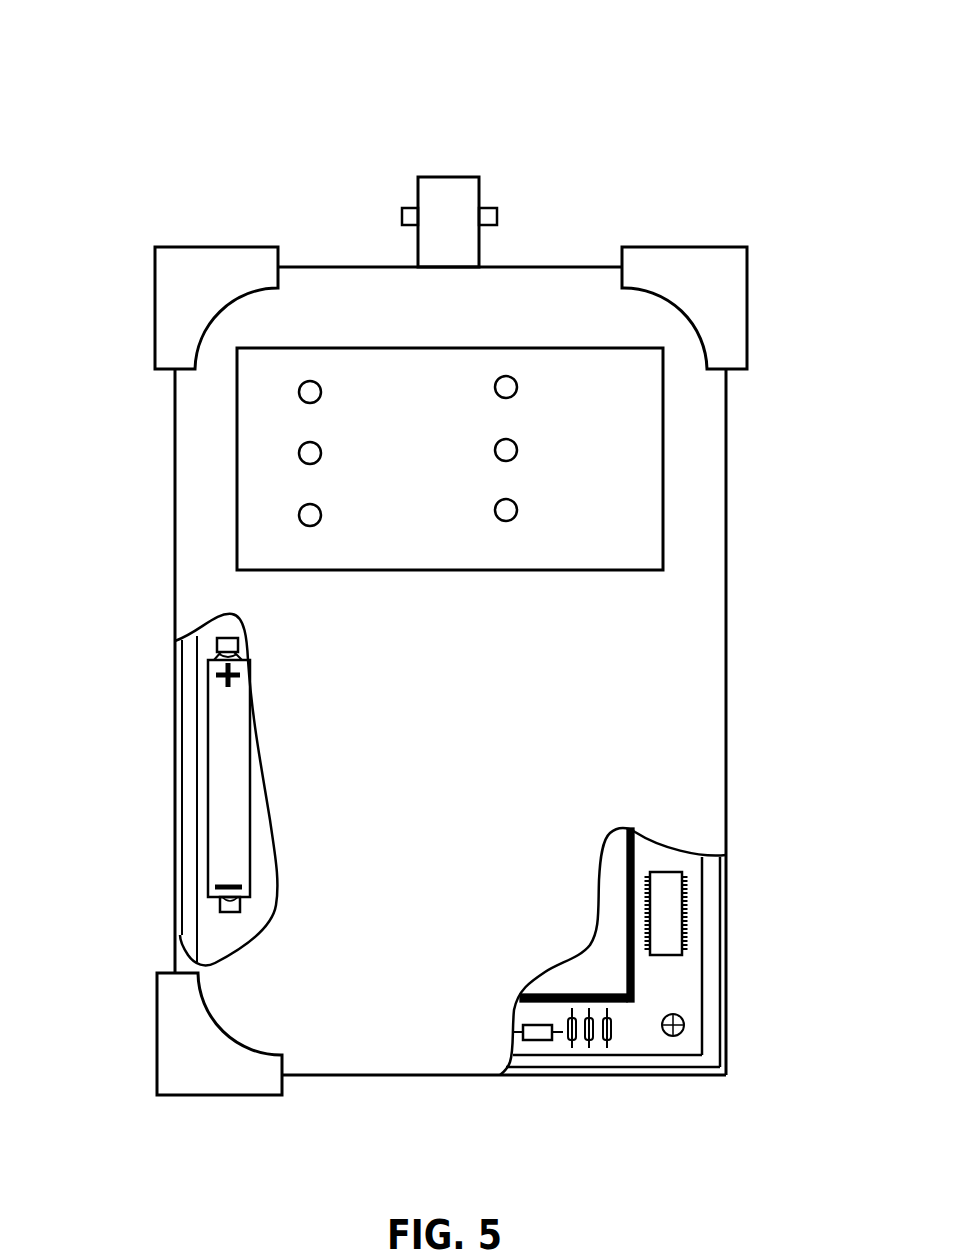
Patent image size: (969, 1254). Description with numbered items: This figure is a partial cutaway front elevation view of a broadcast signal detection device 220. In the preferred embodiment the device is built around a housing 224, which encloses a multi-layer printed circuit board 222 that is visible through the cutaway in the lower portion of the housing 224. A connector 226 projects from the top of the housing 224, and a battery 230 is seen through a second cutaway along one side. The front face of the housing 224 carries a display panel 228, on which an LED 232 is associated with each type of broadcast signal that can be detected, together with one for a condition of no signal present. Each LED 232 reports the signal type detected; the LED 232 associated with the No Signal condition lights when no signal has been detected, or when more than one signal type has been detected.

The broadcast signal detection device 220 is at (340, 82).
The multi-layer printed circuit board 222 is at (685, 982).
The housing 224 is at (727, 742).
The connector 226 is at (450, 208).
The display panel 228 is at (655, 475).
The battery 230 is at (212, 787).
The LED 232 is at (495, 515).